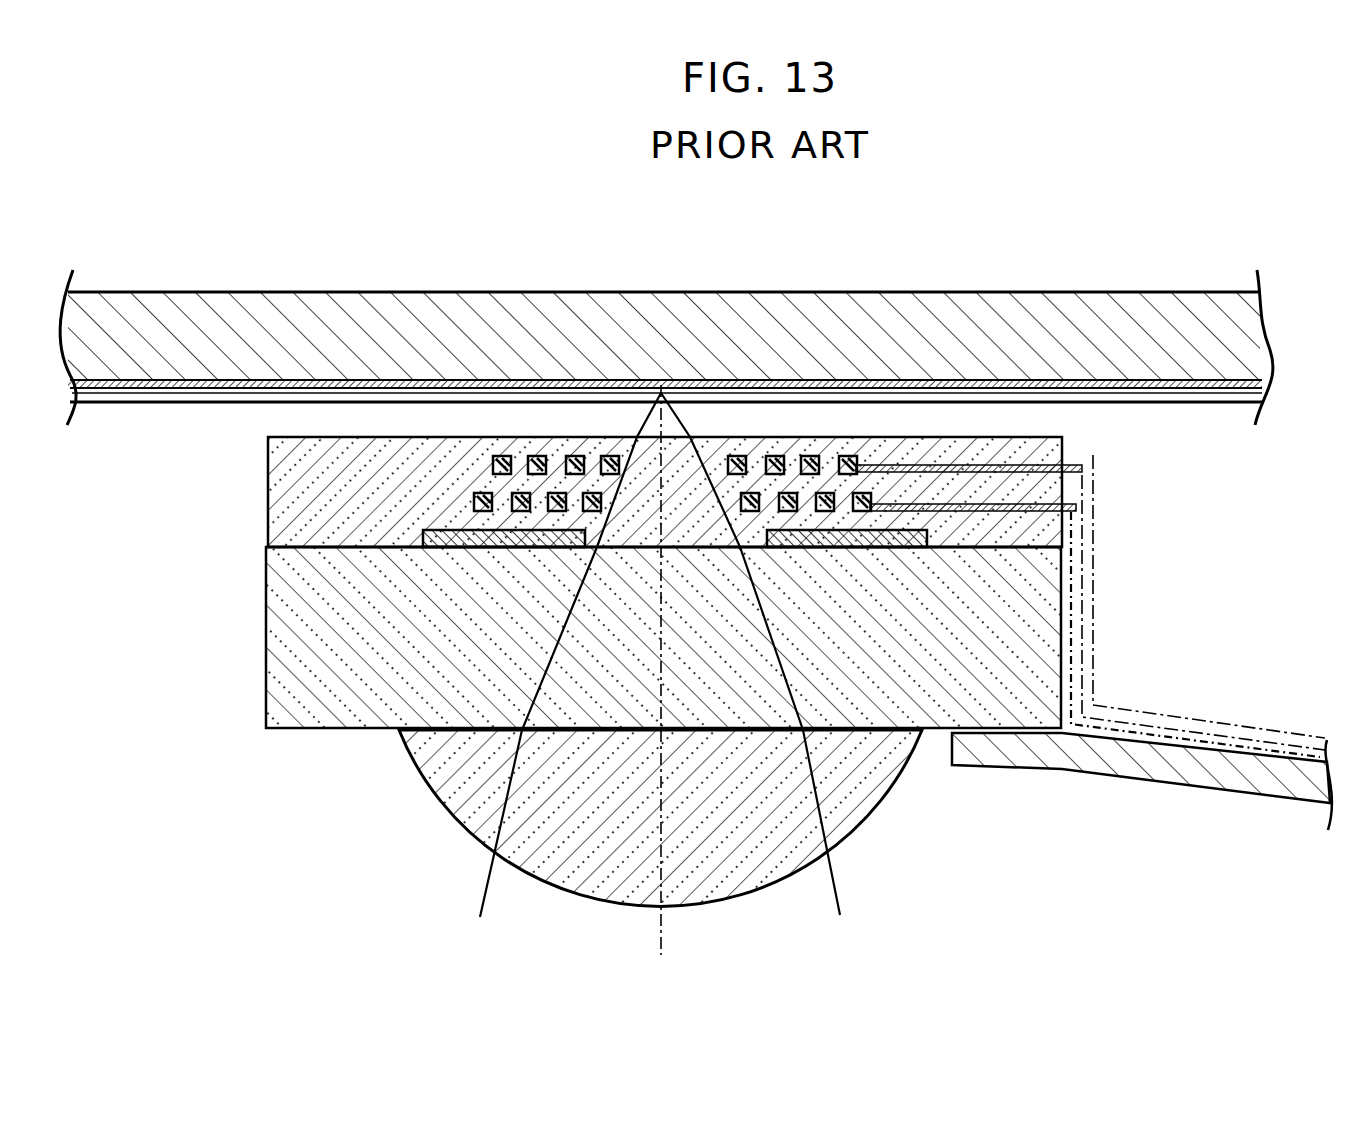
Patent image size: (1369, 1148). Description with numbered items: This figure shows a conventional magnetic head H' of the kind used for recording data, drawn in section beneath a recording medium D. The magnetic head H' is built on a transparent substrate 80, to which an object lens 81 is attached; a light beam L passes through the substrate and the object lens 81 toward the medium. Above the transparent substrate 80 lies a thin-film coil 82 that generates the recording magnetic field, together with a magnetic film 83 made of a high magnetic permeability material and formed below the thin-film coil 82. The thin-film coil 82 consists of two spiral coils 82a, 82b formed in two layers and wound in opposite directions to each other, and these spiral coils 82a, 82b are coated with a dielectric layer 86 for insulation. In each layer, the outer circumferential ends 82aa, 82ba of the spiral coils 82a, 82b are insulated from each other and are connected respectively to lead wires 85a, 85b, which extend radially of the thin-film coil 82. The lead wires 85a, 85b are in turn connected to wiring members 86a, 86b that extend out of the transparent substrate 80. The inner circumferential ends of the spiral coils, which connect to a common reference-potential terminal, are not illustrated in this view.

The optical disc D is at (1022, 264).
The transparent substrate 80 is at (285, 597).
The object lens 81 is at (885, 752).
The thin-film coil 82 is at (427, 498).
The spiral coil 82a is at (497, 460).
The spiral coil 82b is at (463, 483).
The outer circumferential end 82aa is at (848, 462).
The outer circumferential end 82ba is at (878, 498).
The magnetic film 83 is at (423, 535).
The lead wire 85a is at (1082, 468).
The lead wire 85b is at (1076, 508).
The dielectric layer 86 is at (283, 537).
The wiring member 86a is at (1158, 722).
The wiring member 86b is at (1210, 730).
The light beam L is at (838, 868).
The magnetic head H' is at (313, 891).